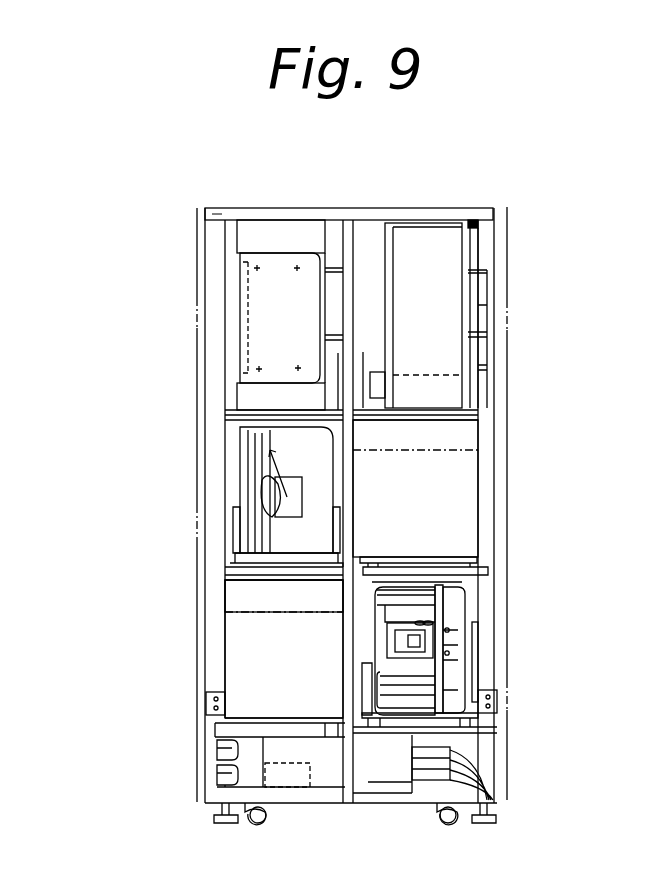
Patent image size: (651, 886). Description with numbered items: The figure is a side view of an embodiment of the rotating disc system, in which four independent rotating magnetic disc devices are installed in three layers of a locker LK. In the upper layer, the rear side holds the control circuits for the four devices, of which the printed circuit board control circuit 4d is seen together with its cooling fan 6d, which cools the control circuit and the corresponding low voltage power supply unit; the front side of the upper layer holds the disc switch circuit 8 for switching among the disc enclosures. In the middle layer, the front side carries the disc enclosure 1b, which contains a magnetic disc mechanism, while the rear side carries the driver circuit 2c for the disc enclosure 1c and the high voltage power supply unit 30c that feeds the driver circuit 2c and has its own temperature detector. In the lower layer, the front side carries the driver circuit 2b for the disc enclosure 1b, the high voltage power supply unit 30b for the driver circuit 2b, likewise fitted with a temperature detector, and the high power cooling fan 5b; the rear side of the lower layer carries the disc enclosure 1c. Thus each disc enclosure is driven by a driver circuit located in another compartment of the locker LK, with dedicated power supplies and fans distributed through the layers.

The locker LK is at (468, 207).
The cooling fan 6d is at (262, 228).
The control circuit 4d is at (257, 300).
The disc switch circuit 8 is at (447, 260).
The disc enclosure 1b is at (270, 450).
The driver circuit 2c is at (480, 497).
The high voltage power supply unit 30c is at (460, 488).
The high power cooling fan 5b is at (240, 597).
The driver circuit 2b is at (206, 649).
The high voltage power supply unit 30b is at (247, 657).
The disc enclosure 1c is at (460, 640).